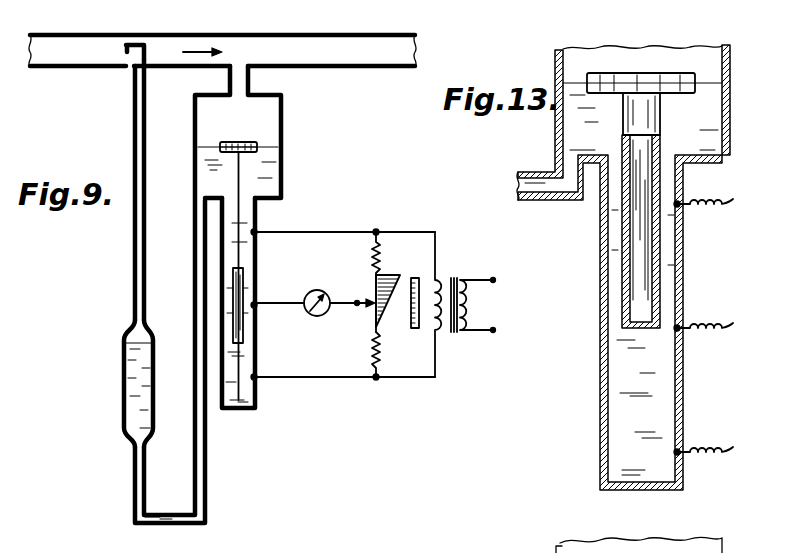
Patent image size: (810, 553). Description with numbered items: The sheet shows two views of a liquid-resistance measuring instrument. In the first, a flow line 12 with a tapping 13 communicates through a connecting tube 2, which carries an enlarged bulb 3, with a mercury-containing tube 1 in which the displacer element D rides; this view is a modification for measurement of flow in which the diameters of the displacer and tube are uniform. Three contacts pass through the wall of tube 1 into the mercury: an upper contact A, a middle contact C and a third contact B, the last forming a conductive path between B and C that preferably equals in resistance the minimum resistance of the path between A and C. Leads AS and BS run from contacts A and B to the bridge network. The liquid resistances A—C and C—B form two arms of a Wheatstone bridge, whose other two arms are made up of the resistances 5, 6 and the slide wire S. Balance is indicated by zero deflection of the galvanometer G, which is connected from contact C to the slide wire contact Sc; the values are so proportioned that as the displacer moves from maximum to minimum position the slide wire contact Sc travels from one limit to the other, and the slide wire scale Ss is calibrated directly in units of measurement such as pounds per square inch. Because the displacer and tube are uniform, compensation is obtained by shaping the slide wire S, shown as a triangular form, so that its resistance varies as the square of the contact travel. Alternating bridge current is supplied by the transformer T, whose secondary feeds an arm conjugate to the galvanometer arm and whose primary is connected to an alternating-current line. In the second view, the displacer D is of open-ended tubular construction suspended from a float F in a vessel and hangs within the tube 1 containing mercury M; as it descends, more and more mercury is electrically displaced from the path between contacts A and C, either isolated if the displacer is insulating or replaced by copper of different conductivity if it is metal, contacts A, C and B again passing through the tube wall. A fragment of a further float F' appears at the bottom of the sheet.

In FIG. 9, the main pipe 12 is at (354, 58).
In FIG. 9, the tap / pressure inlet tube 13 is at (125, 67).
In FIG. 9, the U-tube siphon leg 2 is at (194, 288).
In FIG. 9, the bulb 3 is at (122, 383).
In FIG. 9, the float tube 1 is at (257, 352).
In FIG. 13, the float tube 1 is at (603, 375).
In FIG. 9, the contact A is at (256, 235).
In FIG. 13, the contact A is at (680, 206).
In FIG. 9, the contact C is at (256, 308).
In FIG. 13, the contact C is at (680, 330).
In FIG. 9, the third contact B is at (256, 380).
In FIG. 13, the third contact B is at (680, 454).
In FIG. 9, the upper conductor AS is at (318, 231).
In FIG. 9, the lower conductor BS is at (320, 380).
In FIG. 9, the galvanometer G is at (317, 290).
In FIG. 9, the slide wire contact Sc is at (357, 306).
In FIG. 9, the resistance 5 is at (380, 250).
In FIG. 9, the resistance 6 is at (380, 362).
In FIG. 9, the slide wire S is at (388, 305).
In FIG. 9, the slide wire scale Ss is at (416, 278).
In FIG. 9, the transformer T is at (458, 332).
In FIG. 13, the float F is at (596, 87).
In FIG. 13, the displacer element D is at (638, 238).
In FIG. 13, the mercury M is at (622, 440).
In FIG. 13, the float (partial figure) F' is at (622, 538).